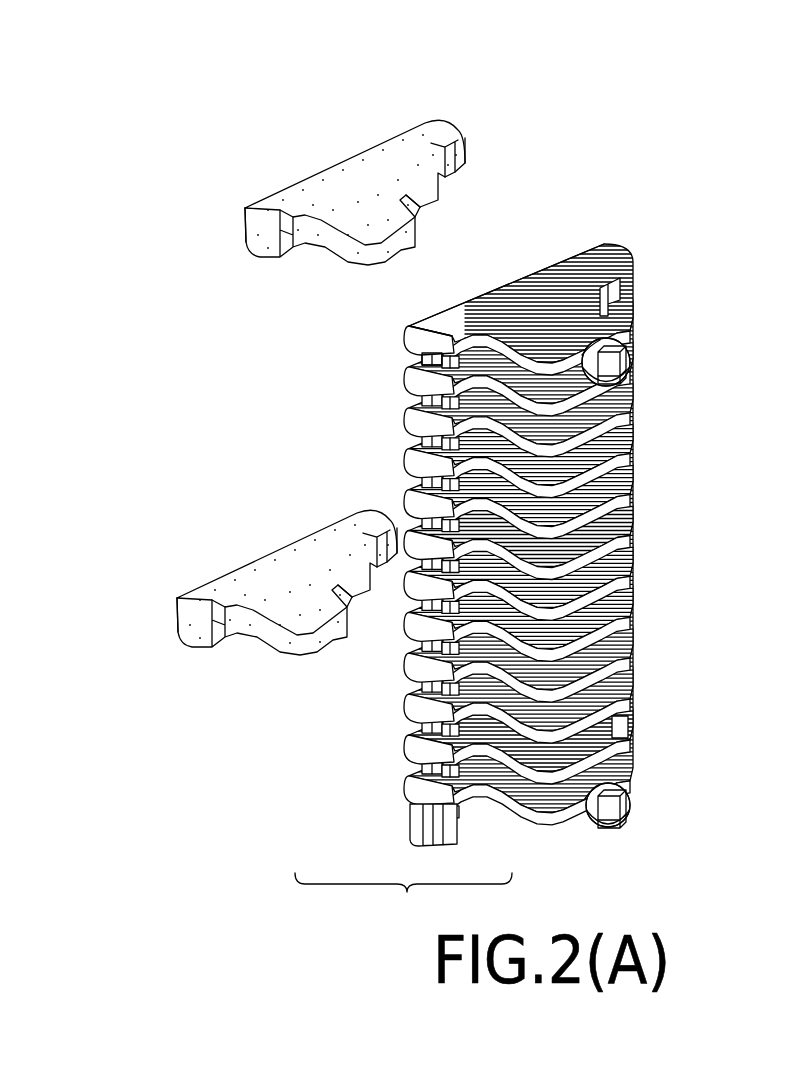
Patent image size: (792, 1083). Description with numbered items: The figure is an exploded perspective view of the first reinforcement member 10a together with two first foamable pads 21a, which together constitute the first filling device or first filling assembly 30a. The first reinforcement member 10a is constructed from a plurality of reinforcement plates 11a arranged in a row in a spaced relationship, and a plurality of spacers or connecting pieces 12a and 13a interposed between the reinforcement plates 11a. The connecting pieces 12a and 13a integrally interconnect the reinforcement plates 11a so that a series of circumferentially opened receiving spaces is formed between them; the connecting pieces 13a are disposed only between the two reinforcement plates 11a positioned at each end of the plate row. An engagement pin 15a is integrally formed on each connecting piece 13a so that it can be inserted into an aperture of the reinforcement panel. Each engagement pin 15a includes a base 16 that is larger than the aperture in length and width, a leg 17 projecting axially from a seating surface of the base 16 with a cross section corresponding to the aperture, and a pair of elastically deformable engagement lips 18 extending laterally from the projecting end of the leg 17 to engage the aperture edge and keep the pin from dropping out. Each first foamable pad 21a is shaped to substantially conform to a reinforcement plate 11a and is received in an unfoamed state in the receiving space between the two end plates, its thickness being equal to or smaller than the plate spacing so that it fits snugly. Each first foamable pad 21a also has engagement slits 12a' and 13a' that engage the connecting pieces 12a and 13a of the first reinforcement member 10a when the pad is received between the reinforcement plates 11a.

The first reinforcement member 10a is at (558, 253).
The reinforcement plate 11a is at (497, 310).
The connecting piece 12a is at (507, 571).
The engagement slit 12a' is at (355, 423).
The connecting piece 13a is at (556, 555).
The engagement slit 13a' is at (384, 396).
The engagement pin 15a is at (703, 298).
The base 16 is at (606, 337).
The leg 17 is at (618, 355).
The engagement lip 18 is at (627, 396).
The first foamable pad 21a is at (339, 165).
The first filling device 30a is at (403, 901).